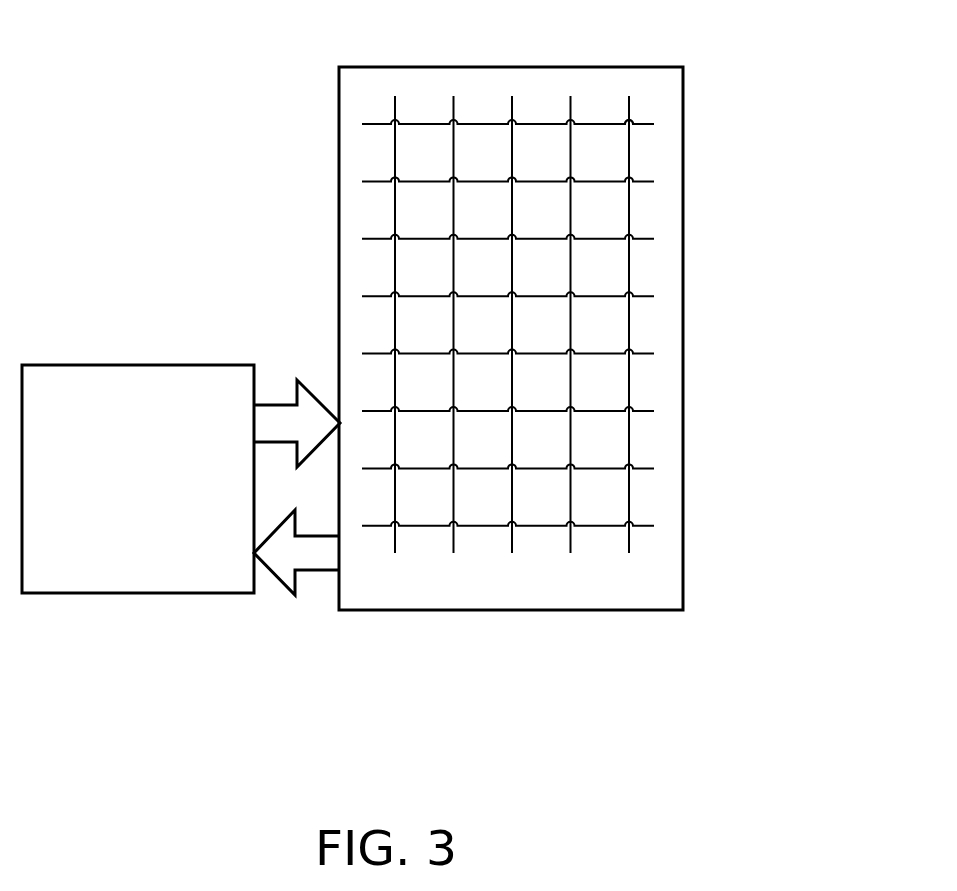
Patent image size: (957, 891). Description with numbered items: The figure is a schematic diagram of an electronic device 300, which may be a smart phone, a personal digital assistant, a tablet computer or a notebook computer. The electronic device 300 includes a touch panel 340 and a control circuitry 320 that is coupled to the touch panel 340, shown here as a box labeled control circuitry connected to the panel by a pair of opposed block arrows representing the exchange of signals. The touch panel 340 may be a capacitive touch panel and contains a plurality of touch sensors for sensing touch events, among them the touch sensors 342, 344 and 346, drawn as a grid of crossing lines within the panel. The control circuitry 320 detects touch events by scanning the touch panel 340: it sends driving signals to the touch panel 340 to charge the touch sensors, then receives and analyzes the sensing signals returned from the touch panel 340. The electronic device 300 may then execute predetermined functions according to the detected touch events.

The electronic device 300 is at (800, 588).
The control circuitry 320 is at (133, 365).
The touch panel 340 is at (683, 188).
The touch sensor 342 is at (406, 536).
The touch sensor 344 is at (528, 310).
The touch sensor 346 is at (636, 118).